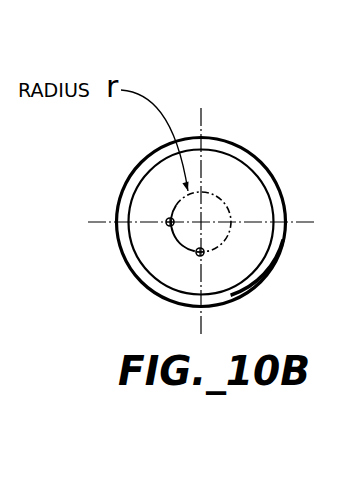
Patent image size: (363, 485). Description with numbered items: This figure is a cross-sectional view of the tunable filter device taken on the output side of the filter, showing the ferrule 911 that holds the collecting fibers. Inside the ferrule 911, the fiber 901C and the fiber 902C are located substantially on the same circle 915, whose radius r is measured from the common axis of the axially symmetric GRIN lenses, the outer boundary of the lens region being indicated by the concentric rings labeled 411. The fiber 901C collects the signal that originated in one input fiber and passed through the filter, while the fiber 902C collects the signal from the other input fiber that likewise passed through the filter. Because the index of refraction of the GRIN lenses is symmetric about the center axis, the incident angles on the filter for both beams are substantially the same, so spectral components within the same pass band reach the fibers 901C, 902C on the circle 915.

The roller / cylindrical member 411 is at (148, 155).
The ferrule 911 is at (226, 296).
The circle 915 is at (218, 247).
The fiber 902C is at (164, 232).
The fiber 901C is at (197, 258).